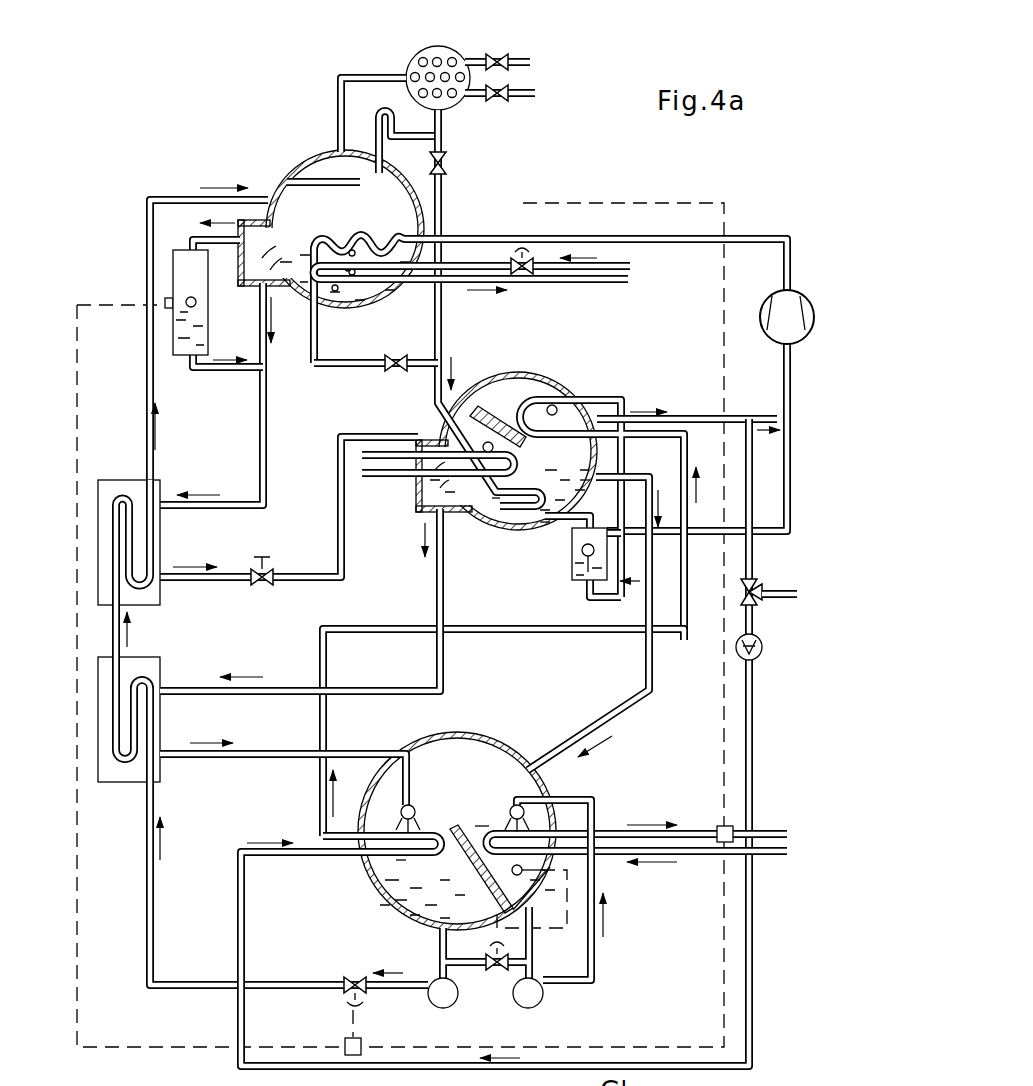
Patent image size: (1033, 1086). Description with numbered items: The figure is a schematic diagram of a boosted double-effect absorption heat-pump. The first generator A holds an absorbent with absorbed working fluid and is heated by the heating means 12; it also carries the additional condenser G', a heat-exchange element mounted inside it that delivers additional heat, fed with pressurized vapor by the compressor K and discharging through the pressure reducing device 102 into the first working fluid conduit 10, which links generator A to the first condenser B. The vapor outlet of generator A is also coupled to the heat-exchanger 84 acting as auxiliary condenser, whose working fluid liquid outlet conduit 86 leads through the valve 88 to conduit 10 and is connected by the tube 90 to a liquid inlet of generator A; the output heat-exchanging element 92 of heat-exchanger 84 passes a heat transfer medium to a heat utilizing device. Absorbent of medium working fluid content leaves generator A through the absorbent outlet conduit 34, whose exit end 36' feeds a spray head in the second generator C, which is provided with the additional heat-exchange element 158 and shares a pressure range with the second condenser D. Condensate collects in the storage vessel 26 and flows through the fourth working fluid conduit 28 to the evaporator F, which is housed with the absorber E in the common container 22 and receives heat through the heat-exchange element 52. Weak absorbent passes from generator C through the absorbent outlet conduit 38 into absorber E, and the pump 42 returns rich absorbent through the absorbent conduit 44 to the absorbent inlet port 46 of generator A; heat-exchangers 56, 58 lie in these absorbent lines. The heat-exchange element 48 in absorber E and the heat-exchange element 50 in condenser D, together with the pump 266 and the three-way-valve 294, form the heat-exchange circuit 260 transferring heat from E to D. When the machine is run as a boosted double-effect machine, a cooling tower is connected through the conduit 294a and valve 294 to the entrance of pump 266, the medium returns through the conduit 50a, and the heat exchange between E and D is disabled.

The first working fluid conduit 10 is at (443, 377).
The heating means 12 is at (367, 283).
The common container 22 is at (457, 732).
The storage vessel 26 is at (572, 573).
The fourth working fluid conduit 28 is at (645, 698).
The absorbent outlet conduit 34 is at (263, 433).
The exit end of conduit 34 36' is at (289, 494).
The absorbent outlet conduit 38 is at (443, 657).
The pump 42 is at (430, 1000).
The absorbent conduit 44 is at (155, 902).
The absorbent inlet port 46 is at (273, 197).
The heat-exchange element 48 is at (367, 870).
The heat-exchange element 50 is at (577, 430).
The conduit 50a is at (765, 417).
The heat-exchange element 52 is at (613, 833).
The heat-exchanger 56 is at (160, 668).
The heat-exchanger 58 is at (160, 485).
The heat-exchanger 84 is at (403, 53).
The working fluid liquid outlet conduit 86 is at (443, 123).
The valve 88 is at (447, 162).
The tube 90 is at (377, 120).
The output heat-exchanging element 92 is at (475, 56).
The pressure reducing device 102 is at (392, 373).
The additional heat-exchange element 158 is at (417, 480).
The heat-exchange circuit 260 is at (745, 938).
The pump 266 is at (760, 656).
The three-way-valve 294 is at (755, 582).
The conduit 294a is at (785, 603).
The first generator A is at (403, 212).
The first condenser B is at (557, 520).
The second generator C is at (477, 500).
The second condenser D is at (598, 498).
The absorber E is at (403, 869).
The evaporator F is at (482, 814).
The additional condenser G' is at (367, 280).
The compressor K is at (795, 330).